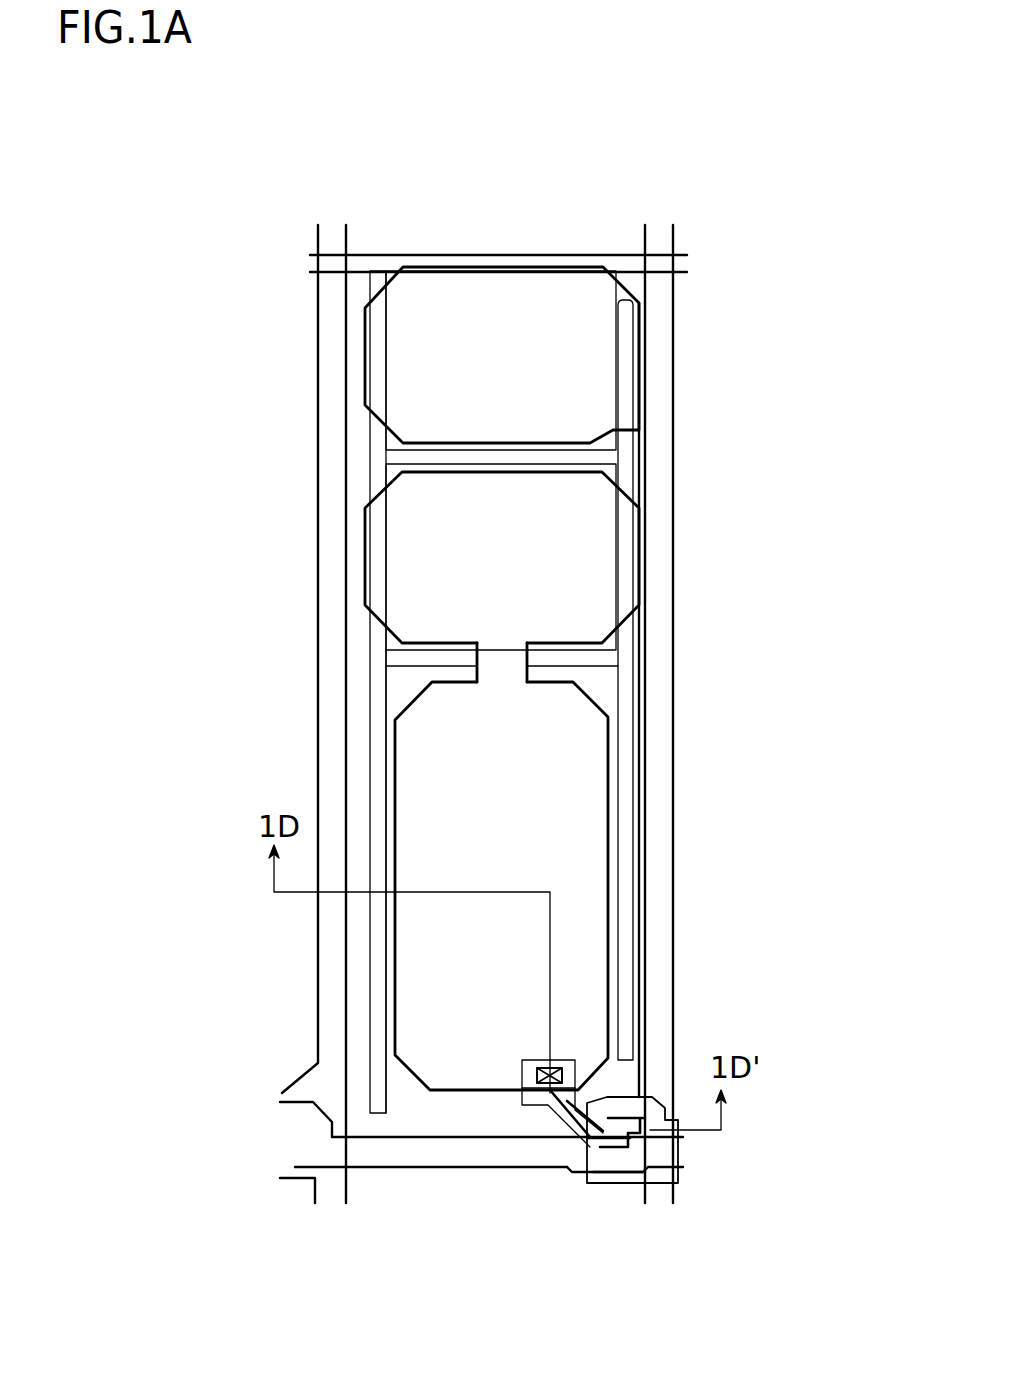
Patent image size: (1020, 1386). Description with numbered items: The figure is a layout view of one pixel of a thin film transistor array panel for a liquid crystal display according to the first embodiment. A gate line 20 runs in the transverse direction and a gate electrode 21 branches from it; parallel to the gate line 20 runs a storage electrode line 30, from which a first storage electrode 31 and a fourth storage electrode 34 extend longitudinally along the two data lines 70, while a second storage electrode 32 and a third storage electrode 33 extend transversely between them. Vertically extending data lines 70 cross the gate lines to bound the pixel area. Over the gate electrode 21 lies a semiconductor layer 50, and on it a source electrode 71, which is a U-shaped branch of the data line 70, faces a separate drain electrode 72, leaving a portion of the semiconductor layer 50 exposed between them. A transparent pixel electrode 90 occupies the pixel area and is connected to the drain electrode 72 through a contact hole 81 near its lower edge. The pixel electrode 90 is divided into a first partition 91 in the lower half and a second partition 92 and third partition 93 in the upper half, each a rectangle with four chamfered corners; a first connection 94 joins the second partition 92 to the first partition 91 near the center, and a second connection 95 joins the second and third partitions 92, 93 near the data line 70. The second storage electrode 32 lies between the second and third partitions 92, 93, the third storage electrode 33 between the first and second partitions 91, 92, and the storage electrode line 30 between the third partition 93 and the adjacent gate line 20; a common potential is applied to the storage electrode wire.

The gate line 20 is at (524, 1206).
The gate electrode 21 is at (673, 1140).
The storage electrode line 30 is at (498, 255).
The first storage electrode 31 is at (370, 748).
The second storage electrode 32 is at (587, 447).
The third storage electrode 33 is at (605, 665).
The fourth storage electrode 34 is at (637, 760).
The semiconductor layer 50 is at (617, 1183).
The data line 70 is at (317, 322).
The source electrode 71 is at (640, 1082).
The drain electrode 72 is at (560, 1135).
The contact hole 81 is at (537, 1073).
The pixel electrode 90 is at (373, 678).
The first partition 91 is at (395, 722).
The second partition 92 is at (363, 556).
The third partition 93 is at (363, 372).
The first connection 94 is at (528, 672).
The second connection 95 is at (643, 457).